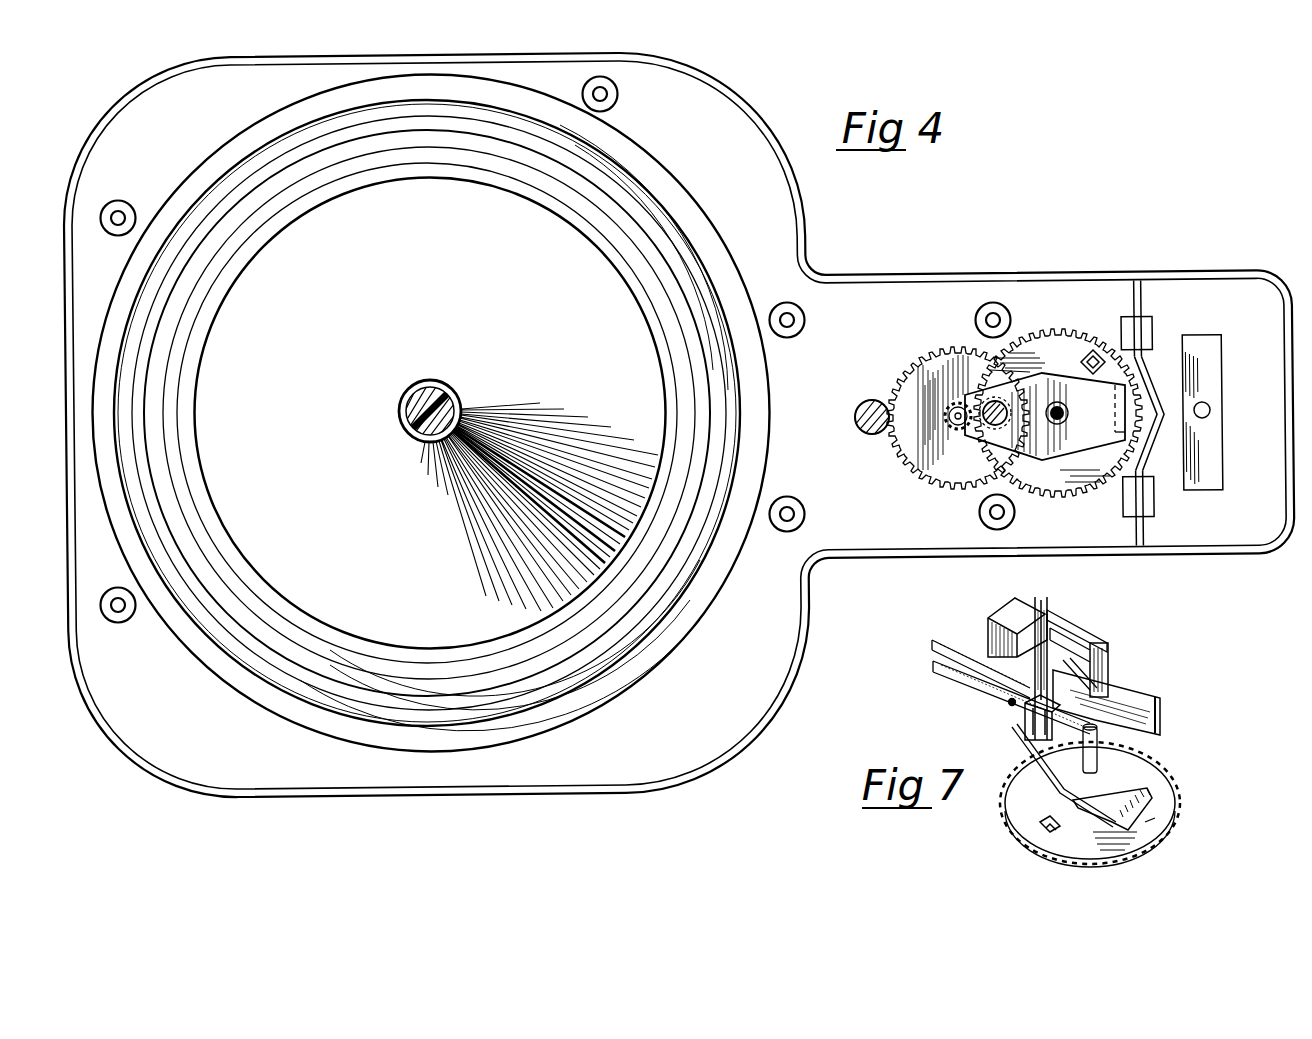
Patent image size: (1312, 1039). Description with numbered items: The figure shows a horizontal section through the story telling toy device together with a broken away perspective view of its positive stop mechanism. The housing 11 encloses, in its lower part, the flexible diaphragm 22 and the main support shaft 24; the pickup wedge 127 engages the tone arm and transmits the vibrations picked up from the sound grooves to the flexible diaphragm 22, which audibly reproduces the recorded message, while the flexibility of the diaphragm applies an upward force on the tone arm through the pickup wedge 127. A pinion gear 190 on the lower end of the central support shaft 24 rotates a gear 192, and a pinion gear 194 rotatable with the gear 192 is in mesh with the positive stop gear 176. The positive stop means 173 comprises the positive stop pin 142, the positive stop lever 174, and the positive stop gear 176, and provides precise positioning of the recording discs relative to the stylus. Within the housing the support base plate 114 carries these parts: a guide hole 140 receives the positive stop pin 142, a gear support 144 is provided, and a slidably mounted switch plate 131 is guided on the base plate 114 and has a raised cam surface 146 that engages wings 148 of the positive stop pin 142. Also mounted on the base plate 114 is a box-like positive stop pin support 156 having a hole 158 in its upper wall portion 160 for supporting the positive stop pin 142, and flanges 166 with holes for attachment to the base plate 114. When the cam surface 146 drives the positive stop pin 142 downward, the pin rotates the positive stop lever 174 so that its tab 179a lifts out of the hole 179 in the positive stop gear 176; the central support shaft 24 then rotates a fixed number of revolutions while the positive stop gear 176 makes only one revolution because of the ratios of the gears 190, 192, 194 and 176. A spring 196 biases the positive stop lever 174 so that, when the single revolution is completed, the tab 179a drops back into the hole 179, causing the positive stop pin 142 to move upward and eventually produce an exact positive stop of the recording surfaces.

In FIG. 4, the housing 11 is at (688, 52).
In FIG. 4, the flexible diaphragm 22 is at (460, 267).
In FIG. 4, the pickup wedge 127 is at (420, 398).
In FIG. 4, the main support shaft 24 is at (855, 421).
In FIG. 4, the pinion gear 190 is at (868, 398).
In FIG. 4, the gear 192 is at (935, 358).
In FIG. 4, the pinion gear 194 is at (947, 420).
In FIG. 4, the positive stop pin 142 is at (995, 400).
In FIG. 7, the positive stop pin 142 is at (1048, 600).
In FIG. 4, the positive stop gear 176 is at (1042, 342).
In FIG. 7, the positive stop gear 176 is at (1168, 802).
In FIG. 4, the hole 179 is at (1095, 350).
In FIG. 7, the hole 179 is at (1040, 830).
In FIG. 4, the tab 179a is at (1115, 425).
In FIG. 7, the tab 179a is at (1150, 822).
In FIG. 4, the positive stop lever 174 is at (1100, 406).
In FIG. 7, the positive stop lever 174 is at (1150, 785).
In FIG. 7, the upper wall portion 160 is at (1005, 612).
In FIG. 7, the hole 158 is at (1052, 628).
In FIG. 7, the raised cam surface 146 is at (1106, 648).
In FIG. 7, the positive stop pin support 156 is at (1110, 650).
In FIG. 7, the flanges 166 is at (1100, 690).
In FIG. 7, the support base plate 114 is at (1140, 698).
In FIG. 7, the switch plate 131 is at (1162, 725).
In FIG. 7, the gear support 144 is at (1100, 770).
In FIG. 7, the wings 148 is at (1012, 730).
In FIG. 7, the guide hole 140 is at (1025, 715).
In FIG. 7, the spring 196 is at (1008, 702).
In FIG. 7, the positive stop means 173 is at (943, 678).